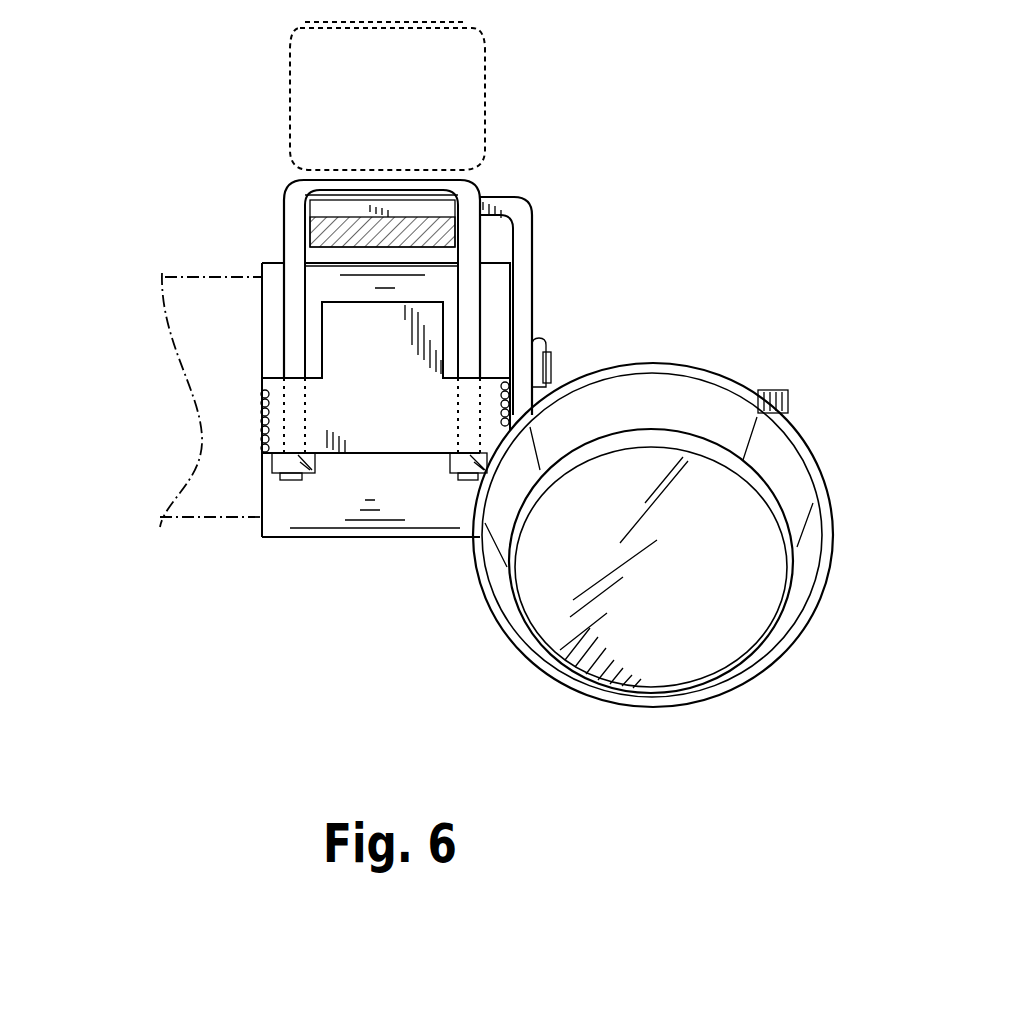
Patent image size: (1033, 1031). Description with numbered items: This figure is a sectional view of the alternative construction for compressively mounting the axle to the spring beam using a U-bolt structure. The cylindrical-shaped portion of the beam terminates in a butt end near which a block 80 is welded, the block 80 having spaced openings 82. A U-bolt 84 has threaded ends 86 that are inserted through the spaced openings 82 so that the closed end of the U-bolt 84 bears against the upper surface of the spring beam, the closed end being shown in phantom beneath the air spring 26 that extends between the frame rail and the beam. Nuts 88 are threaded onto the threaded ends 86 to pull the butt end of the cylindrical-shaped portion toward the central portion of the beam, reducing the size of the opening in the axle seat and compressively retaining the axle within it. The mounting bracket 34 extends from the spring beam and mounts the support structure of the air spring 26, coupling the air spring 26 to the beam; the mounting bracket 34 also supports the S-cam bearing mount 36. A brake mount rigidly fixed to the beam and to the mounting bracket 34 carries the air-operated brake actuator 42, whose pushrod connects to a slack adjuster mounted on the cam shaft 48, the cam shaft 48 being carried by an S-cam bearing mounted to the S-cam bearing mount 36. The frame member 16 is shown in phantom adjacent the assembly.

The frame tube 16 is at (193, 277).
The air spring 26 is at (488, 63).
The mounting bracket 34 is at (533, 270).
The S-cam bearing mount 36 is at (557, 388).
The air-operated brake actuator 42 is at (522, 655).
The cam shaft 48 is at (522, 372).
The block 80 is at (262, 388).
The spaced openings 82 is at (500, 395).
The U-bolt 84 is at (375, 176).
The threaded ends 86 is at (293, 256).
The nuts 88 is at (317, 473).